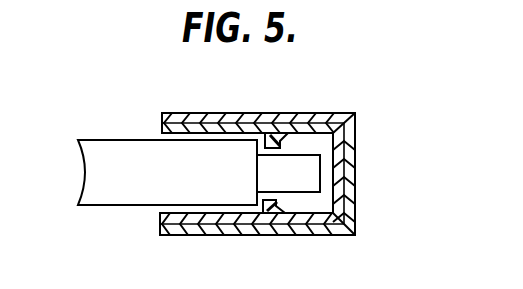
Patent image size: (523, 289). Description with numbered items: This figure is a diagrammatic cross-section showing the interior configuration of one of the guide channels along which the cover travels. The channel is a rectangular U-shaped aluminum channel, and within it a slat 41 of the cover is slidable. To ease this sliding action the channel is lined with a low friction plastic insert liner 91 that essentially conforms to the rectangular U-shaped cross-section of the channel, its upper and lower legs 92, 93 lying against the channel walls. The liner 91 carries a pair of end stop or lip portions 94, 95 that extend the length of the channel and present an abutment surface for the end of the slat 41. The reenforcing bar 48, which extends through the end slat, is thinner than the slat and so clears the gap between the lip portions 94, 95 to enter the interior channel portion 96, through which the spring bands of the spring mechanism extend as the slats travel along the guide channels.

The slat 41 is at (98, 150).
The reenforcing bar 48 is at (312, 172).
The insert liner 91 is at (210, 236).
The top wall of channel 92 is at (163, 112).
The bottom wall of channel 93 is at (160, 229).
The lip portion 94 is at (275, 131).
The lip portion 95 is at (282, 204).
The interior channel portion 96 is at (345, 150).